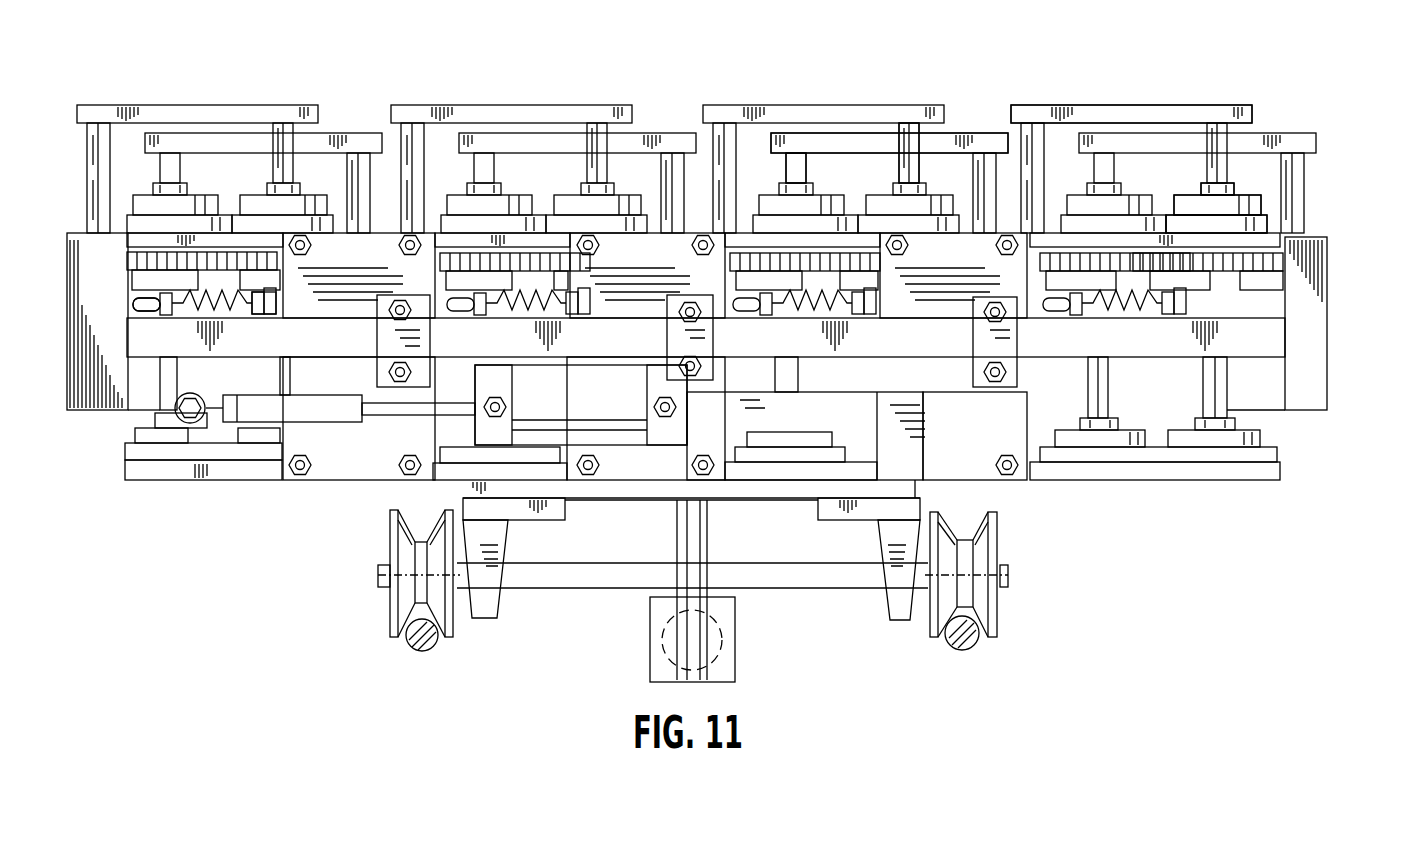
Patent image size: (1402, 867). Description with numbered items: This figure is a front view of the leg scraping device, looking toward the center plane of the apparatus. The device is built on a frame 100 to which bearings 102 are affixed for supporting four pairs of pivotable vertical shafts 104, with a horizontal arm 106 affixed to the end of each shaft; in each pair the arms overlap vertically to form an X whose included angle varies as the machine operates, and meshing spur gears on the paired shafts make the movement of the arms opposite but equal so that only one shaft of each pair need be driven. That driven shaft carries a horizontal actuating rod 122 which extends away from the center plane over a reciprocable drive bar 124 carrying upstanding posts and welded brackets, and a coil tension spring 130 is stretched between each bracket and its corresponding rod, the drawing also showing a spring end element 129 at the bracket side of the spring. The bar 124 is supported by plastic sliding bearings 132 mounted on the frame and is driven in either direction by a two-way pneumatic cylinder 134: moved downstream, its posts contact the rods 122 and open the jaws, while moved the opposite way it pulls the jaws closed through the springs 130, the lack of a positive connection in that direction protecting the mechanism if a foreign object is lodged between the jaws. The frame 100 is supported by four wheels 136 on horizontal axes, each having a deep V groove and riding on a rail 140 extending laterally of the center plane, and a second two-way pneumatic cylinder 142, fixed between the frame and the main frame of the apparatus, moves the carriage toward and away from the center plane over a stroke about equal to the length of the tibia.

The frame 100 is at (1297, 283).
The bearings 102 is at (1250, 207).
The pivotable vertical shafts 104 is at (892, 168).
The horizontal arm 106 is at (1052, 107).
The horizontal actuating rod 122 is at (133, 303).
The reciprocable drive bar 124 is at (352, 305).
The spring stop 129 is at (283, 285).
The coil tension spring 130 is at (232, 323).
The plastic sliding bearings 132 is at (430, 350).
The two-way pneumatic cylinder 134 is at (640, 345).
The wheels 136 is at (1000, 620).
The rail 140 is at (968, 650).
The second two-way pneumatic cylinder 142 is at (737, 641).